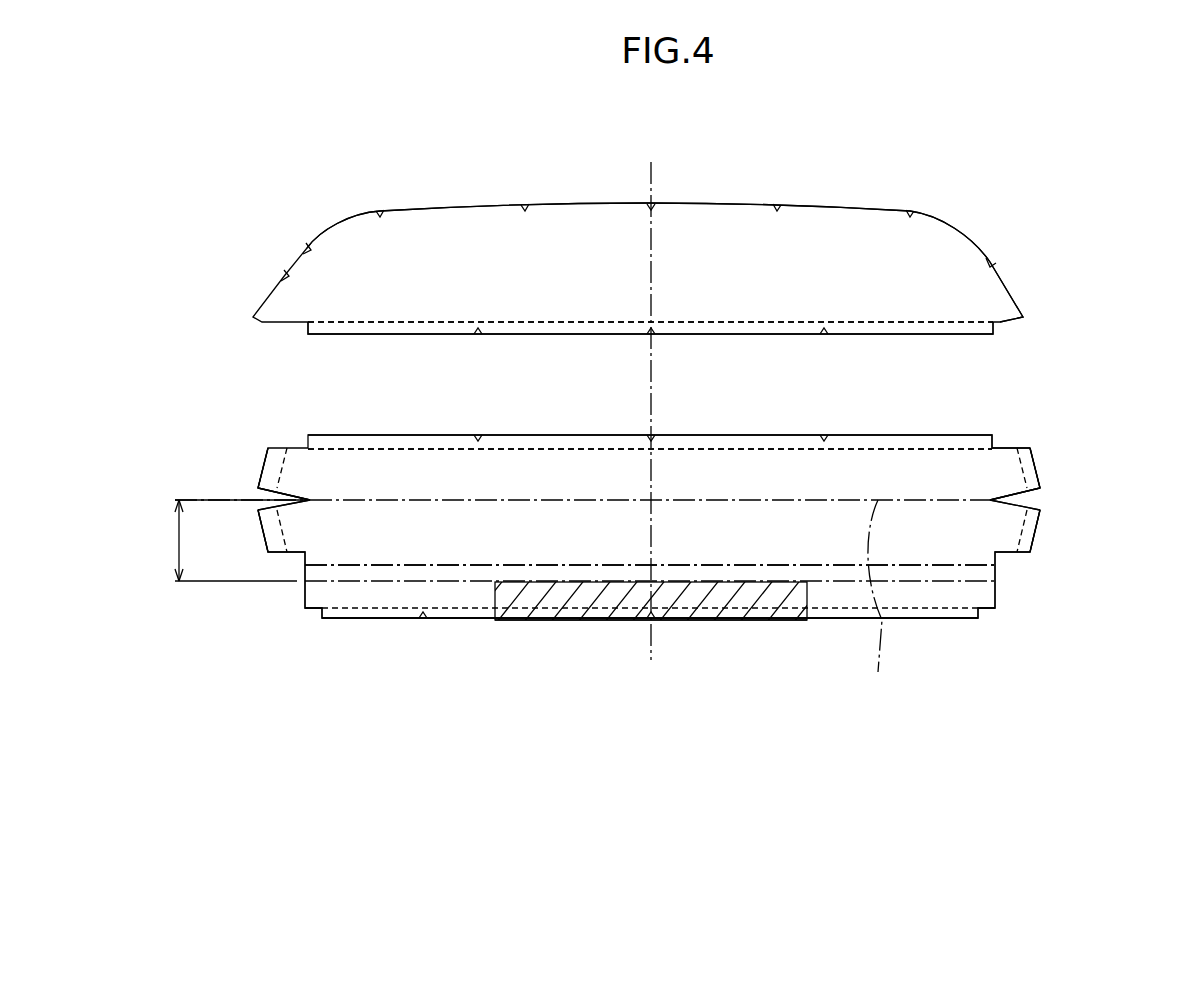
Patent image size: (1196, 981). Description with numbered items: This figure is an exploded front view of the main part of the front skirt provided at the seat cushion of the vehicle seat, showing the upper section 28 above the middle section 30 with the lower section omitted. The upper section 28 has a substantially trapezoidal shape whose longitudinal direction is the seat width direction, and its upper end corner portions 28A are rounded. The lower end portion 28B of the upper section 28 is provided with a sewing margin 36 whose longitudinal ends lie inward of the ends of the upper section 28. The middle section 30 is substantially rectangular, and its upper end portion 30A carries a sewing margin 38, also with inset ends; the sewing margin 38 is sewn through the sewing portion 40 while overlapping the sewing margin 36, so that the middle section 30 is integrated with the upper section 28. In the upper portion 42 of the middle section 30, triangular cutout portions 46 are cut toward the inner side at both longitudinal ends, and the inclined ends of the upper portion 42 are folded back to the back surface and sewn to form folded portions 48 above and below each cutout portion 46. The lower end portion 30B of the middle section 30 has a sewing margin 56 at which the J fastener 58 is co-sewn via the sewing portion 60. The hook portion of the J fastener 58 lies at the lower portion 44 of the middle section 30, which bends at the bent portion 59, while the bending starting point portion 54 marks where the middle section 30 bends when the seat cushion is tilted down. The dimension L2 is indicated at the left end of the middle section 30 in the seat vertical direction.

The upper section 28 is at (997, 225).
The upper end corner portions 28A is at (351, 212).
The lower end portion 28B is at (1000, 307).
The middle section 30 is at (1045, 467).
The upper end portion 30A is at (975, 473).
The lower end portion 30B is at (963, 596).
The sewing margin 36 is at (980, 327).
The sewing margin 38 is at (935, 443).
The sewing portion 40 is at (840, 322).
The upper portion 42 is at (335, 470).
The lower portion 44 is at (345, 592).
The cutout portions 46 is at (293, 503).
The folded portions 48 is at (275, 448).
The bending starting point portion 54 is at (874, 605).
The sewing margin 56 is at (462, 612).
The J fastener 58 is at (590, 600).
The bent portion 59 is at (395, 568).
The sewing portion 60 is at (732, 620).
The distance L2 is at (225, 540).